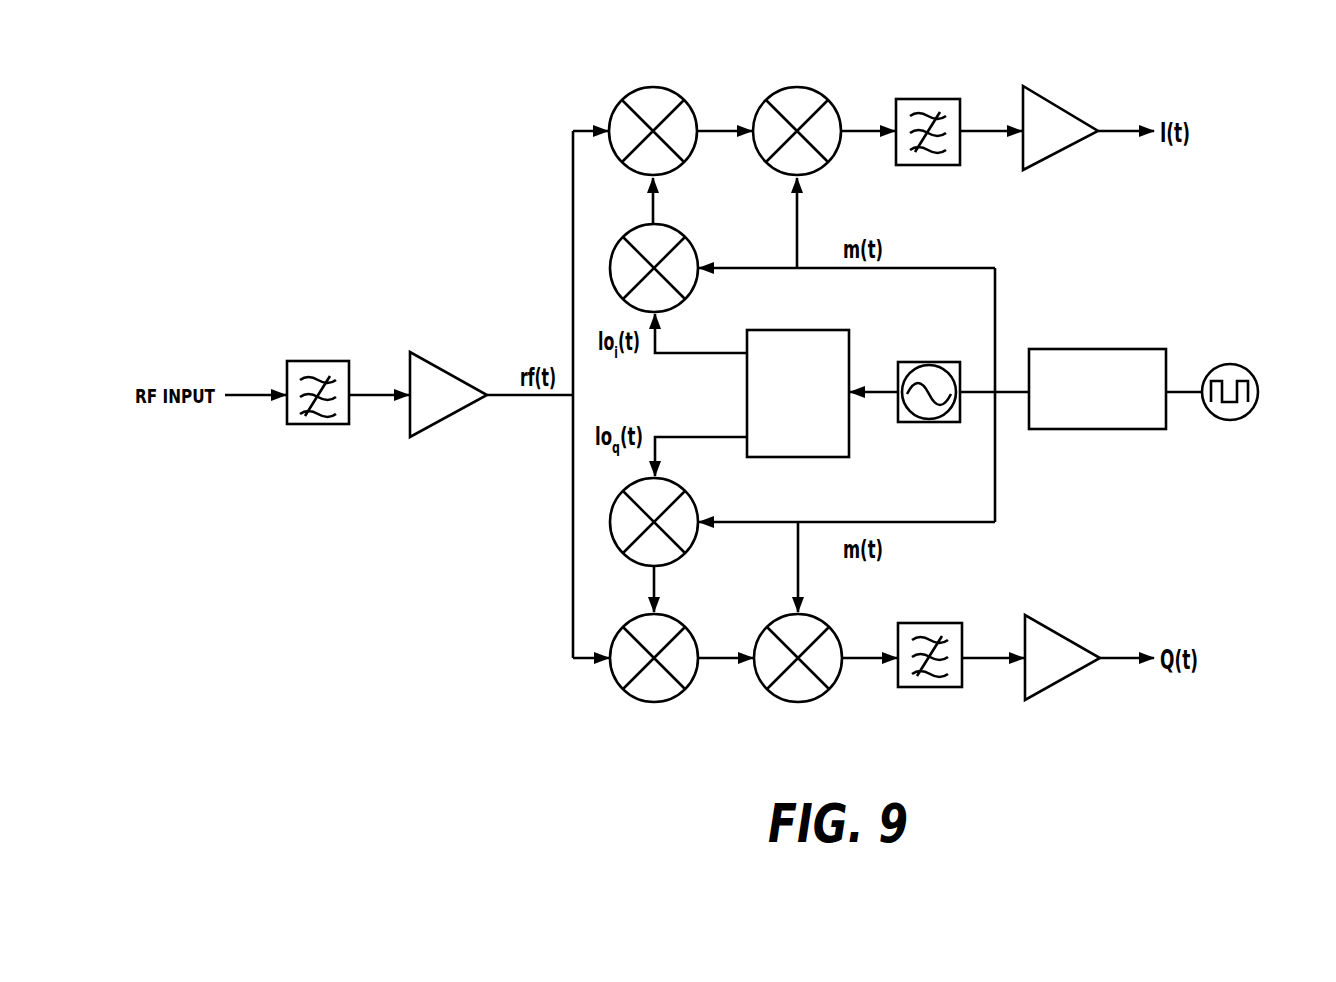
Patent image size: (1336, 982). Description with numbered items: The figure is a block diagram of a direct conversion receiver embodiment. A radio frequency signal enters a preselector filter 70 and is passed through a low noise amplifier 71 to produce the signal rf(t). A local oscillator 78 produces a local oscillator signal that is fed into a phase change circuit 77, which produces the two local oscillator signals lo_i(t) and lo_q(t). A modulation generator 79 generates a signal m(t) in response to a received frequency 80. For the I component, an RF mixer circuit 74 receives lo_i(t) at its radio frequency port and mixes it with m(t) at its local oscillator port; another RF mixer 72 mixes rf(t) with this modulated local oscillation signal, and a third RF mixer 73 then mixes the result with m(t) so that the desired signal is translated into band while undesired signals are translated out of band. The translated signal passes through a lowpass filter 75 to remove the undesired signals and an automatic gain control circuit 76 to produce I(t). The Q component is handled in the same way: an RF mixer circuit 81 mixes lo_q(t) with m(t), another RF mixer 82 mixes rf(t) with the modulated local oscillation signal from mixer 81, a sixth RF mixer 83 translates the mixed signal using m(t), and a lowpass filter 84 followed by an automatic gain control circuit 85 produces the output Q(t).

The preselector filter 70 is at (317, 424).
The low noise amplifier 71 is at (455, 372).
The RF mixer 72 is at (658, 87).
The third RF mixer 73 is at (800, 87).
The RF mixer circuit 74 is at (632, 227).
The lowpass filter 75 is at (930, 99).
The automatic gain control circuit 76 is at (1062, 102).
The phase change circuit 77 is at (849, 437).
The local oscillator 78 is at (910, 360).
The modulation generator 79 is at (1098, 429).
The received frequency 80 is at (1230, 420).
The RF mixer circuit 81 is at (632, 562).
The RF mixer 82 is at (660, 702).
The sixth RF mixer 83 is at (800, 702).
The lowpass filter 84 is at (930, 687).
The automatic gain control circuit 85 is at (1062, 633).